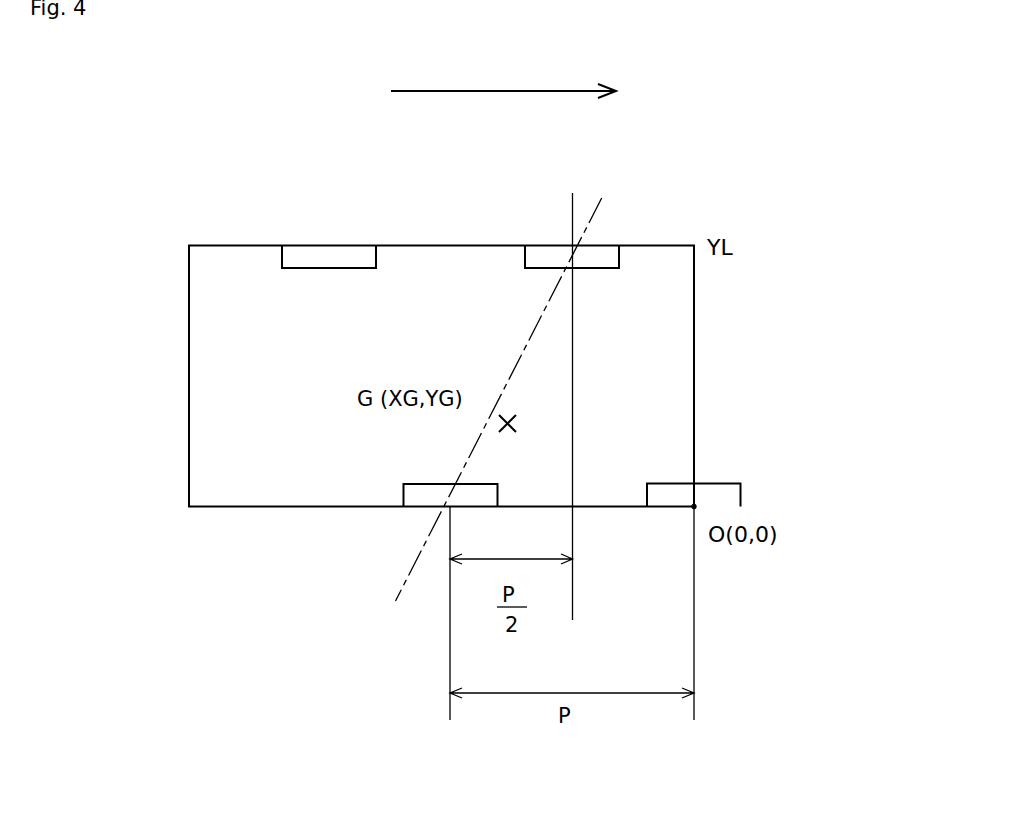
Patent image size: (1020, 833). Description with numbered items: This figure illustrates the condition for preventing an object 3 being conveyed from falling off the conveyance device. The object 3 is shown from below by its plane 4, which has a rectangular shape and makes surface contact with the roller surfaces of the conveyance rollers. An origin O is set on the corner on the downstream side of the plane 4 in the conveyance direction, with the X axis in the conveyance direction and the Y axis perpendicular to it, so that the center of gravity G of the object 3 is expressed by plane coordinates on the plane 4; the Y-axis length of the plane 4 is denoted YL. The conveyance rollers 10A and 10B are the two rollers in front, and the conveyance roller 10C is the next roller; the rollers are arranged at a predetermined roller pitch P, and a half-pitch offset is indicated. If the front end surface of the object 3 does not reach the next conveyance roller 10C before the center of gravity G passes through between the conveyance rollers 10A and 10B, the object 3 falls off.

The object 3 is at (158, 252).
The plane 4 is at (312, 344).
The conveyance roller 10A is at (412, 493).
The conveyance roller 10B is at (530, 257).
The next conveyance roller 10C is at (736, 497).